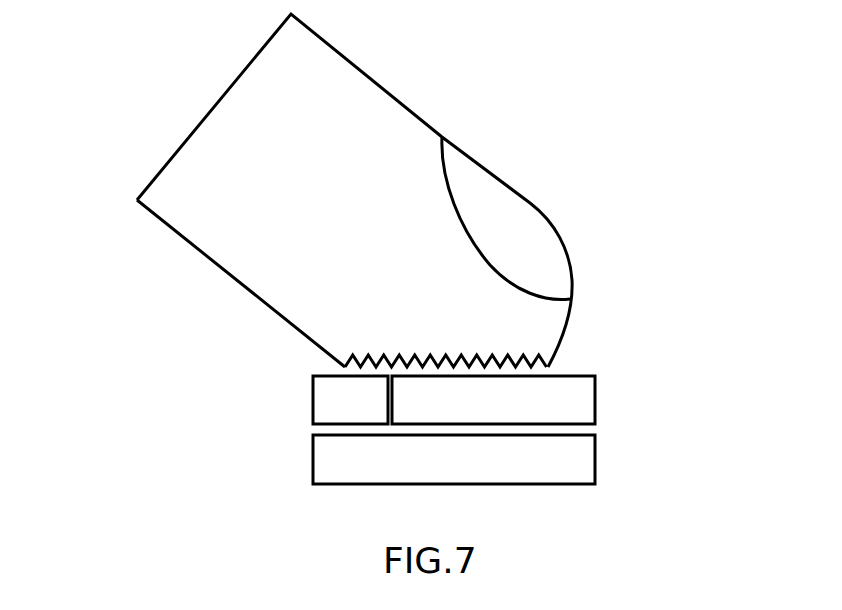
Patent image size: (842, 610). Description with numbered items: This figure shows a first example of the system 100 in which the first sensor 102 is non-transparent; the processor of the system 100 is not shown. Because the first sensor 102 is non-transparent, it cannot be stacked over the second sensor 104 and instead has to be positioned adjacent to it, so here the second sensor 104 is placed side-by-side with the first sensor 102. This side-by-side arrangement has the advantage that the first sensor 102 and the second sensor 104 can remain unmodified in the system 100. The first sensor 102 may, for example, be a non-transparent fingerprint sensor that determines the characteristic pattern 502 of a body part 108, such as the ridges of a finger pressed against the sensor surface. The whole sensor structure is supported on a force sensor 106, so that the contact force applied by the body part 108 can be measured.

The system 100 is at (138, 421).
The first sensor 102 is at (596, 402).
The second sensor 104 is at (312, 402).
The force sensor 106 is at (596, 460).
The body part 108 is at (402, 101).
The characteristic pattern 502 is at (372, 338).